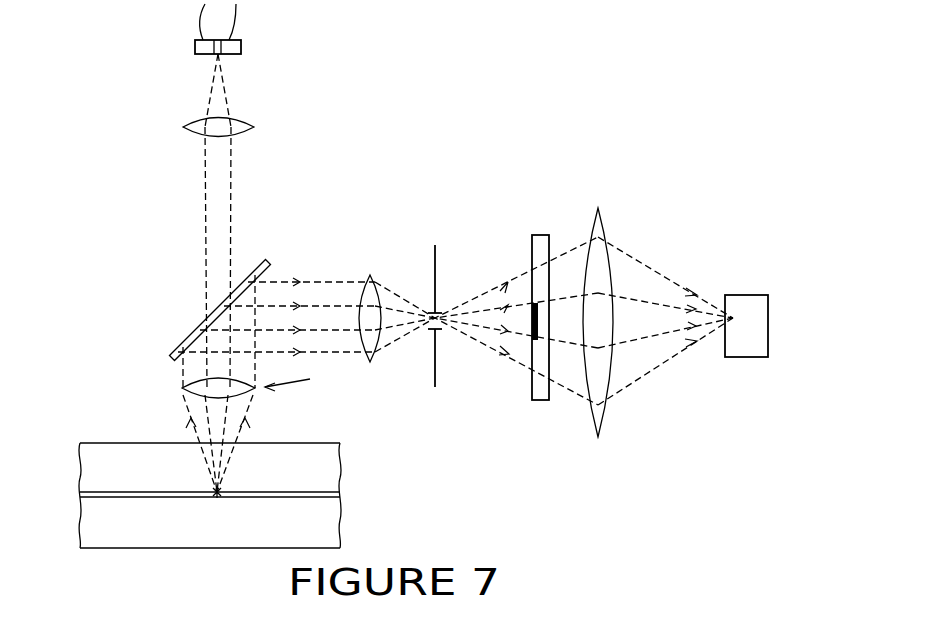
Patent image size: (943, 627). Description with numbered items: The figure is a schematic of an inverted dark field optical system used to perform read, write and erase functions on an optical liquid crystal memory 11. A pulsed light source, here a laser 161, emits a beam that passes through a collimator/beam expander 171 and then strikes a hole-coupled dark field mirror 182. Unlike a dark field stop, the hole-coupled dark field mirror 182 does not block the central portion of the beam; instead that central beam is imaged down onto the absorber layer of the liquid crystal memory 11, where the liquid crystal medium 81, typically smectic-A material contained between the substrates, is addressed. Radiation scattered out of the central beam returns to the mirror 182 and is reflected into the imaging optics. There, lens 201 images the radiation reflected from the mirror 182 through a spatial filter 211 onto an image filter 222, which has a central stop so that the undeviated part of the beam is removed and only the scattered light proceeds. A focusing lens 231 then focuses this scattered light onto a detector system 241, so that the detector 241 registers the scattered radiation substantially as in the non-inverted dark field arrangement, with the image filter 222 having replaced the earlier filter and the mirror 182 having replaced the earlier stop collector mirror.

The laser 161 is at (241, 46).
The collimator/beam expander 171 is at (183, 127).
The hole-coupled dark field mirror 182 is at (196, 332).
The lens 201 is at (370, 275).
The spatial filter 211 is at (438, 250).
The image filter 222 is at (540, 235).
The focusing lens 231 is at (598, 208).
The detector system 241 is at (745, 295).
The liquid crystal medium 81 is at (340, 495).
The liquid crystal memory 11 is at (68, 443).